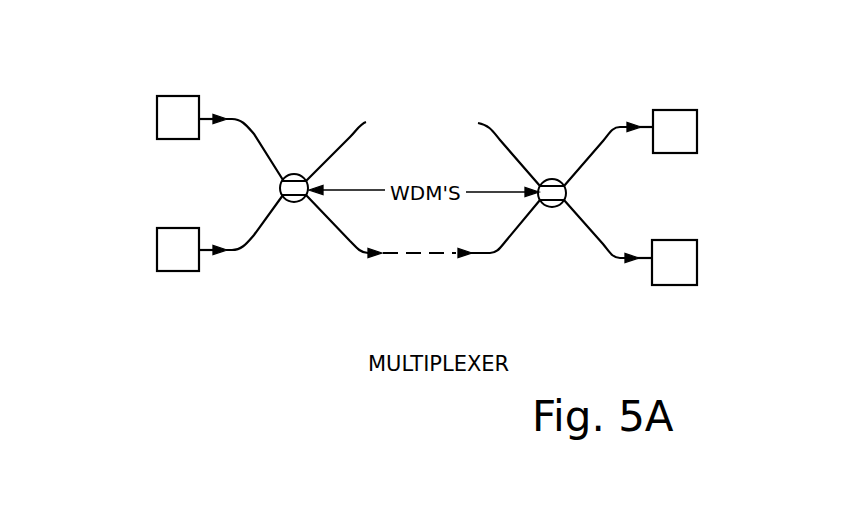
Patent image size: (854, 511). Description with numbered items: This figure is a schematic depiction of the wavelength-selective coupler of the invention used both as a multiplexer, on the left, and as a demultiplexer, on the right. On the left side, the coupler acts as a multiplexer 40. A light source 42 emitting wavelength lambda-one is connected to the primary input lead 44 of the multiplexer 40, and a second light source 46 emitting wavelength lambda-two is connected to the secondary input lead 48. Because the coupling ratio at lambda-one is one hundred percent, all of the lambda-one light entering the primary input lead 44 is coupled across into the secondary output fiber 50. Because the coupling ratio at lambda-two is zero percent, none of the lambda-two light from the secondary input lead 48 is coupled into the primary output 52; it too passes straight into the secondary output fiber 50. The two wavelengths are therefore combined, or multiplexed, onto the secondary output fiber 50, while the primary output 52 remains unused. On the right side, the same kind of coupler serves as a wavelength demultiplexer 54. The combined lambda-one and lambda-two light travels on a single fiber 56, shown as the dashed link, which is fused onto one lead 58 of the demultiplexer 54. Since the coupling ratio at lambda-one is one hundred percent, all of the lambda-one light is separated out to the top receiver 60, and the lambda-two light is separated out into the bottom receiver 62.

The multiplexer 40 is at (288, 167).
The light source 42 is at (173, 96).
The primary input lead 44 is at (240, 122).
The light source 46 is at (168, 272).
The secondary input lead 48 is at (246, 241).
The secondary output fiber 50 is at (357, 240).
The primary output 52 is at (355, 128).
The wavelength demultiplexer 54 is at (559, 179).
The single fiber 56 is at (408, 253).
The lead 58 is at (507, 247).
The top receiver 60 is at (673, 110).
The bottom receiver 62 is at (668, 286).